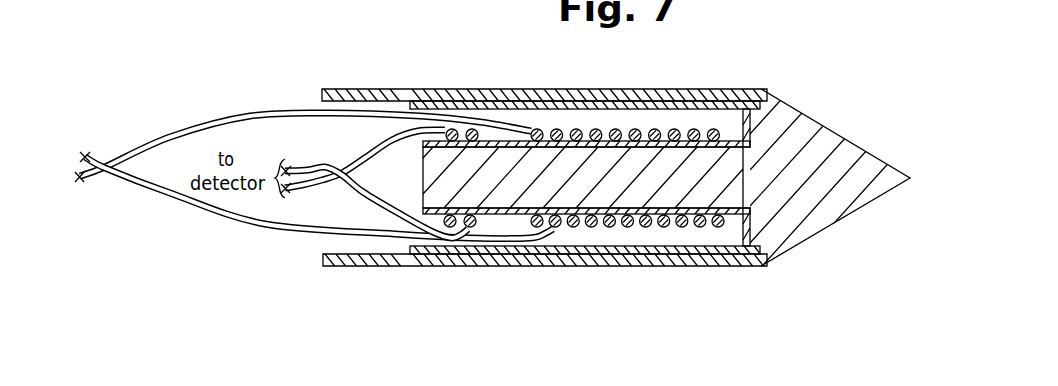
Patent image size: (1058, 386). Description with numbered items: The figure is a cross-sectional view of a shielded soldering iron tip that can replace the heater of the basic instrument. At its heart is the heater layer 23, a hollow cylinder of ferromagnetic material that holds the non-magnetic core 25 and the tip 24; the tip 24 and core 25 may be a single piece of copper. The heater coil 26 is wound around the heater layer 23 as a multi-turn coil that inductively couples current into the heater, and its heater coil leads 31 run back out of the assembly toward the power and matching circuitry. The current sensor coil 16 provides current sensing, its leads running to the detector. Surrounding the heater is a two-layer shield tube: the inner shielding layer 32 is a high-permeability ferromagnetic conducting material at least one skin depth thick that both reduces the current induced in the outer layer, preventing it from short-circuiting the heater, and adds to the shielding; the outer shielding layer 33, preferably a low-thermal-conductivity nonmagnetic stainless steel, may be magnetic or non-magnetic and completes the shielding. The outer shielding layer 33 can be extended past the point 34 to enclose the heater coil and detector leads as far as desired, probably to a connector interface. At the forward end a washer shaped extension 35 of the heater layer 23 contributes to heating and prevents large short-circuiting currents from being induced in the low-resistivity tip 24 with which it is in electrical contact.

The heater coil lead 31 is at (133, 172).
The current sensor coil 16 is at (362, 187).
The extension point of outer layer tube 34 is at (322, 95).
The outer shielding layer 33 is at (482, 89).
The inner shielding layer 32 is at (443, 102).
The washer shaped extension 35 is at (750, 128).
The heater layer 23 is at (707, 142).
The non-magnetic core 25 is at (423, 181).
The heater coil 26 is at (664, 133).
The tip 24 is at (823, 218).